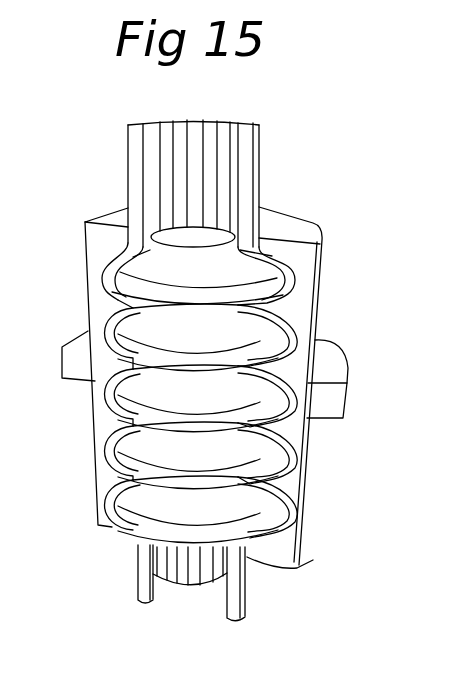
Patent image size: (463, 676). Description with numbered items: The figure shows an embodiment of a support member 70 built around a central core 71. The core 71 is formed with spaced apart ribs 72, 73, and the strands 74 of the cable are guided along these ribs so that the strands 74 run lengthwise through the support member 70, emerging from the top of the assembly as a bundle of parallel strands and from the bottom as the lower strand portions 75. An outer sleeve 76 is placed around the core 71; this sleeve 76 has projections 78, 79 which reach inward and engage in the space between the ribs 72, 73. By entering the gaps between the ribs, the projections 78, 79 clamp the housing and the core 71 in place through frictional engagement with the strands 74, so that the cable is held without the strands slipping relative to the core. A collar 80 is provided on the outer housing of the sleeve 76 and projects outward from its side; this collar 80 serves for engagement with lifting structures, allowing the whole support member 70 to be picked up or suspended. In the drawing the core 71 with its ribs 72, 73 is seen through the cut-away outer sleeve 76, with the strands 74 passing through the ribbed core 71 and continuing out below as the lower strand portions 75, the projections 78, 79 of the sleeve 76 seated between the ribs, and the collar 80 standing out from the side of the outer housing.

The support member 70 is at (264, 365).
The core 71 is at (297, 568).
The rib 72 is at (272, 480).
The rib 73 is at (270, 443).
The strand 74 is at (247, 153).
The lower conductor pins 75 is at (240, 592).
The outer sleeve 76 is at (313, 308).
The projection 78 is at (117, 235).
The projection 79 is at (110, 300).
The collar 80 is at (330, 380).